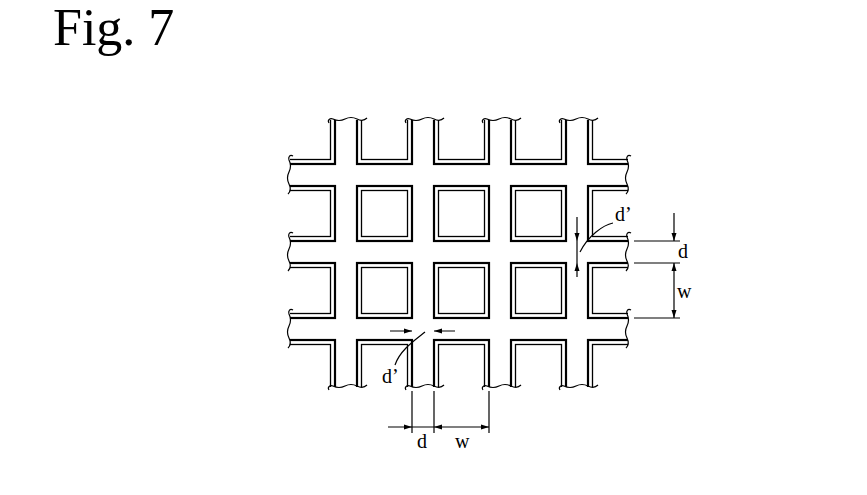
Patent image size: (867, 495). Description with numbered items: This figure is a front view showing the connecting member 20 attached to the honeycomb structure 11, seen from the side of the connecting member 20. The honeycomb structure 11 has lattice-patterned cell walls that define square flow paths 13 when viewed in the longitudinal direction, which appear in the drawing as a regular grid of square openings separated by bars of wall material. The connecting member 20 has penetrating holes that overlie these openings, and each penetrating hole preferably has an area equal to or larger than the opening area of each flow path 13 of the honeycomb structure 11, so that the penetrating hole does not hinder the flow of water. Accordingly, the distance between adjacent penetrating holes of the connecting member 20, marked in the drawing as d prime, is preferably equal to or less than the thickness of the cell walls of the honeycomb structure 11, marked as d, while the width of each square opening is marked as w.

The honeycomb structure 11 is at (382, 162).
The flow path 13 is at (533, 210).
The connecting member 20 is at (602, 173).